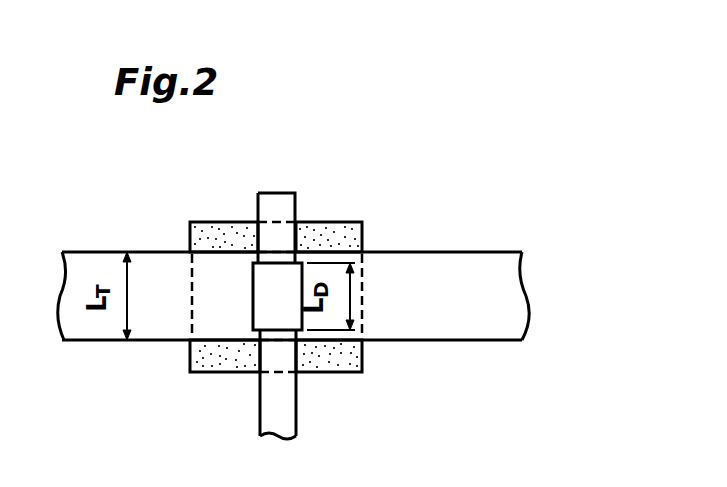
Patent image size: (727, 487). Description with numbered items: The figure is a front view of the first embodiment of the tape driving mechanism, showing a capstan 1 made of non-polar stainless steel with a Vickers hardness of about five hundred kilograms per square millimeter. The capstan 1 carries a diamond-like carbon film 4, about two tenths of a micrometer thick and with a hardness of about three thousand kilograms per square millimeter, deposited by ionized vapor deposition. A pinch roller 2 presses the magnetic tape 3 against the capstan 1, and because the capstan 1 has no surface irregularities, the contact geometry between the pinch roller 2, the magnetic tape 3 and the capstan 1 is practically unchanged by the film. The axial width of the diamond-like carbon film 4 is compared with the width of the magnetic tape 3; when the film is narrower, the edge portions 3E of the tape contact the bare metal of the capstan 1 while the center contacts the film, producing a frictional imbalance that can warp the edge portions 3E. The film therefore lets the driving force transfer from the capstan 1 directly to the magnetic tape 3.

The capstan 1 is at (277, 199).
The pinch roller 2 is at (350, 229).
The magnetic tape 3 is at (453, 262).
The edge portions of the tape 3E is at (398, 376).
The diamond-like carbon film 4 is at (263, 302).